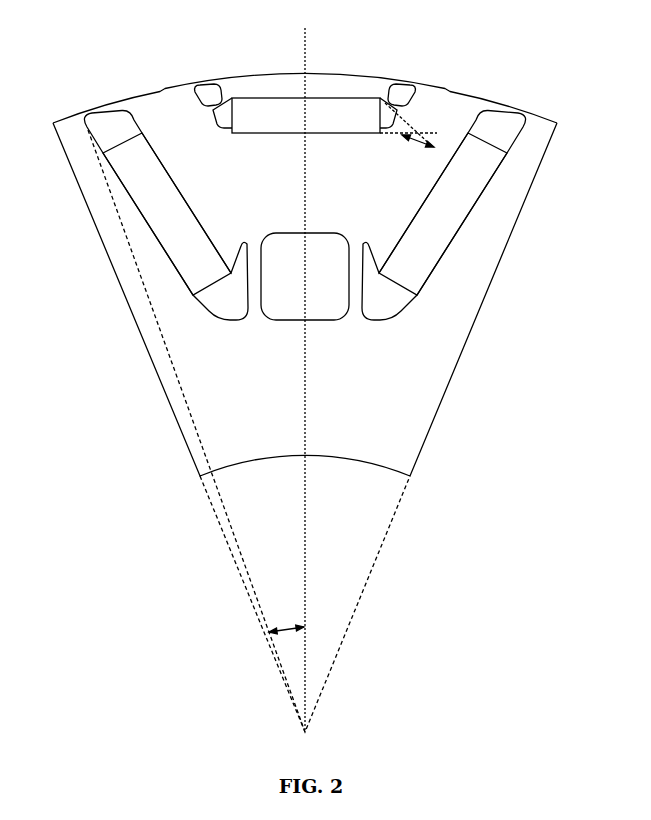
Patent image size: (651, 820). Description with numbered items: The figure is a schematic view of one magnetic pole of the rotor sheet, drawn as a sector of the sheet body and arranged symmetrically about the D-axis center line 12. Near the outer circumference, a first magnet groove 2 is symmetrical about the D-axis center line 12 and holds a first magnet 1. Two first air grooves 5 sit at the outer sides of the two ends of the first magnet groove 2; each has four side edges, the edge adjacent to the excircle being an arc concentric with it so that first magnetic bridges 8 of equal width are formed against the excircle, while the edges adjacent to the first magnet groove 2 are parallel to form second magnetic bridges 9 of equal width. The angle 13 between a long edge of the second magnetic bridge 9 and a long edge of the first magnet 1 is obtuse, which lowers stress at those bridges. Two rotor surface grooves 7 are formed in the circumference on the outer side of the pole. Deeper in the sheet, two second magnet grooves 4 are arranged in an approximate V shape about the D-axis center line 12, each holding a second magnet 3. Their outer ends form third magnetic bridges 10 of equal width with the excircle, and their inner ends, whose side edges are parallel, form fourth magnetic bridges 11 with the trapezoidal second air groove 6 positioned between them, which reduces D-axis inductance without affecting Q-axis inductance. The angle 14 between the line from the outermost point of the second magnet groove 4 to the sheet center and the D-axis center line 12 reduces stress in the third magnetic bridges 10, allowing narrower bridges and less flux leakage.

The first magnet 1 is at (320, 113).
The first magnet groove 2 is at (387, 110).
The second magnet 3 is at (450, 208).
The second magnet groove 4 is at (495, 128).
The first air groove 5 is at (403, 92).
The second air groove 6 is at (332, 272).
The rotor surface groove 7 is at (163, 90).
The first magnetic bridge 8 is at (205, 78).
The second magnetic bridge 9 is at (223, 97).
The third magnetic bridge 10 is at (102, 110).
The fourth magnetic bridge 11 is at (360, 290).
The D-axis center line 12 is at (305, 383).
The angle between second magnetic bridge and long edge of first magnet 13 is at (408, 137).
The angle between connecting line from outermost point of second magnet groove to ce 14 is at (196, 431).